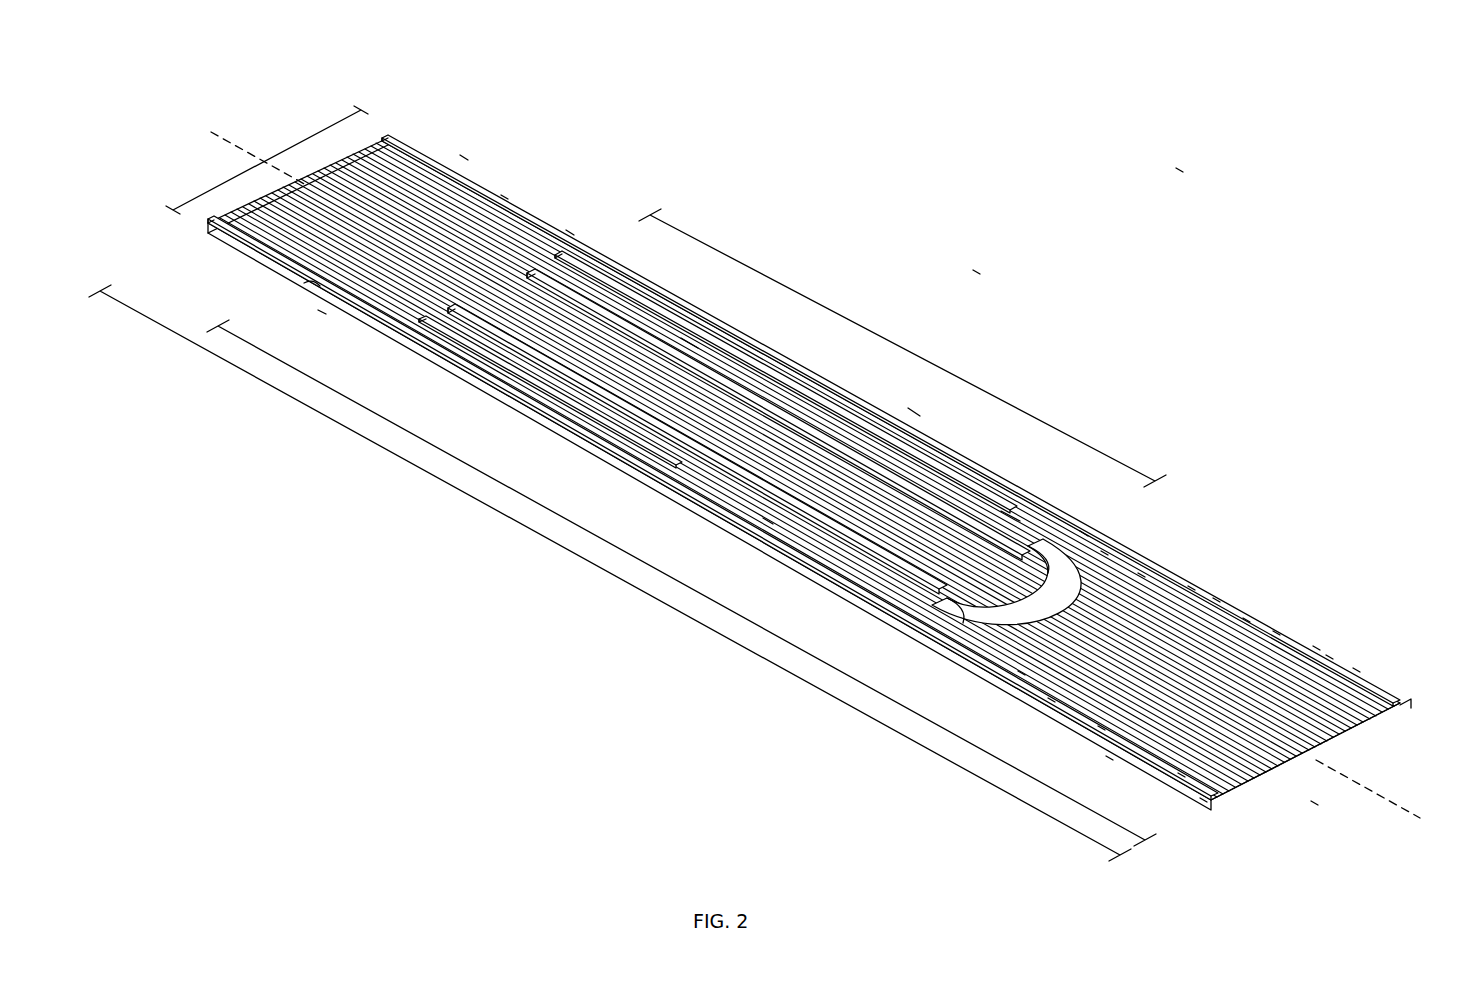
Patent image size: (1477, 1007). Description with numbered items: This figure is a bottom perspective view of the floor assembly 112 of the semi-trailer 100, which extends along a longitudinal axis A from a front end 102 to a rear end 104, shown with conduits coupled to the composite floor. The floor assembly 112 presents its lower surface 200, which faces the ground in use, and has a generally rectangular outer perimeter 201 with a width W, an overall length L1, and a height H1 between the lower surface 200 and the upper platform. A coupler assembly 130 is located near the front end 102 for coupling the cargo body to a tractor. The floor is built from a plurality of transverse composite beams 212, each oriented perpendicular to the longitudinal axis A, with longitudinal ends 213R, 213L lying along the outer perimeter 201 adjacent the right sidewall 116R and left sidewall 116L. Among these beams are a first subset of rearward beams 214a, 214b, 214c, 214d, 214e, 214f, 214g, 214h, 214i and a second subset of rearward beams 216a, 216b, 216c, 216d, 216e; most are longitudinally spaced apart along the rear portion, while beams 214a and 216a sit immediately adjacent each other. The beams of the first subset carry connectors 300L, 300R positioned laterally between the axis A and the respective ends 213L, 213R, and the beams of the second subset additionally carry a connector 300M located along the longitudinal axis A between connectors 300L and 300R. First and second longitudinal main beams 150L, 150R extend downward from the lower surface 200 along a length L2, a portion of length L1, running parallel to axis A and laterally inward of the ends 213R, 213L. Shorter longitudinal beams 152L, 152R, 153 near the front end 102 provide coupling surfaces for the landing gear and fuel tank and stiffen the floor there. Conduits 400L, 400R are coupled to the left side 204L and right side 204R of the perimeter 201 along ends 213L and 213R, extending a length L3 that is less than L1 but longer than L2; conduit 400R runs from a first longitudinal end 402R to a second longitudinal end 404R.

The semi-trailer 100 is at (1168, 160).
The front end 102 is at (385, 112).
The rear end 104 is at (1303, 793).
The floor assembly 112 is at (965, 262).
The left sidewall 116L is at (493, 187).
The right sidewall 116R is at (310, 302).
The coupler assembly 130 is at (452, 147).
The first longitudinal main beam 150L is at (707, 323).
The second longitudinal main beam 150R is at (540, 378).
The longitudinal beam 152L is at (580, 243).
The longitudinal beam 152R is at (440, 348).
The longitudinal beam 153 is at (673, 330).
The lower surface 200 is at (798, 460).
The outer perimeter 201 is at (558, 222).
The left side 204L is at (1380, 690).
The right side 204R is at (700, 490).
The transverse composite beams 212 is at (1012, 513).
The longitudinal end 213L is at (905, 400).
The longitudinal end 213R is at (760, 512).
The rearward beam 214a is at (1072, 524).
The rearward beam 214b is at (1093, 543).
The rearward beam 214c is at (1130, 565).
The rearward beam 214d is at (1180, 578).
The rearward beam 214e is at (1205, 590).
The rearward beam 214f is at (1235, 610).
The rearward beam 214g is at (1265, 623).
The rearward beam 214h is at (1318, 647).
The rearward beam 214i is at (1345, 660).
The rearward beam 216a is at (1072, 523).
The rearward beam 216b is at (1010, 663).
The rearward beam 216c is at (1040, 690).
The rearward beam 216d is at (1098, 748).
The rearward beam 216e is at (1170, 765).
The connector 300L is at (950, 610).
The connector 300M is at (1000, 620).
The connector 300R is at (1030, 540).
The conduit 400L is at (1305, 638).
The conduit 400R is at (1090, 718).
The first longitudinal end 402R is at (298, 277).
The second longitudinal end 404R is at (1192, 790).
The width W is at (292, 128).
The length L1 is at (128, 305).
The length L2 is at (708, 242).
The length L3 is at (238, 333).
The height H1 is at (1405, 695).
The longitudinal axis A is at (1228, 802).